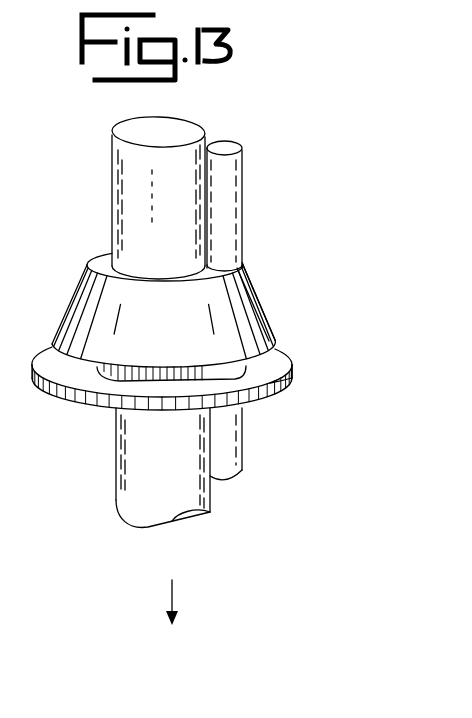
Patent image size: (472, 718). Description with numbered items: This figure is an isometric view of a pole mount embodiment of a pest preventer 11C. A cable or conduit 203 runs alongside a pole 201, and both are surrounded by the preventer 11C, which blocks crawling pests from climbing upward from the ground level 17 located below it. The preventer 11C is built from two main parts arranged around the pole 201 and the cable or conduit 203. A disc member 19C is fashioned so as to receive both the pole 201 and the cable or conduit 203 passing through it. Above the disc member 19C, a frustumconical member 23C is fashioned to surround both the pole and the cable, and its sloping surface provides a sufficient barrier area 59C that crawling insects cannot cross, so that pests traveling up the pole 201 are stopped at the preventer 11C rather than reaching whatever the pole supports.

The pole 201 is at (137, 195).
The cable or conduit 203 is at (232, 190).
The preventer 11C is at (266, 262).
The frustumconical member 23C is at (265, 316).
The disc member 19C is at (268, 371).
The barrier area 59C is at (288, 385).
The ground level 17 is at (174, 588).